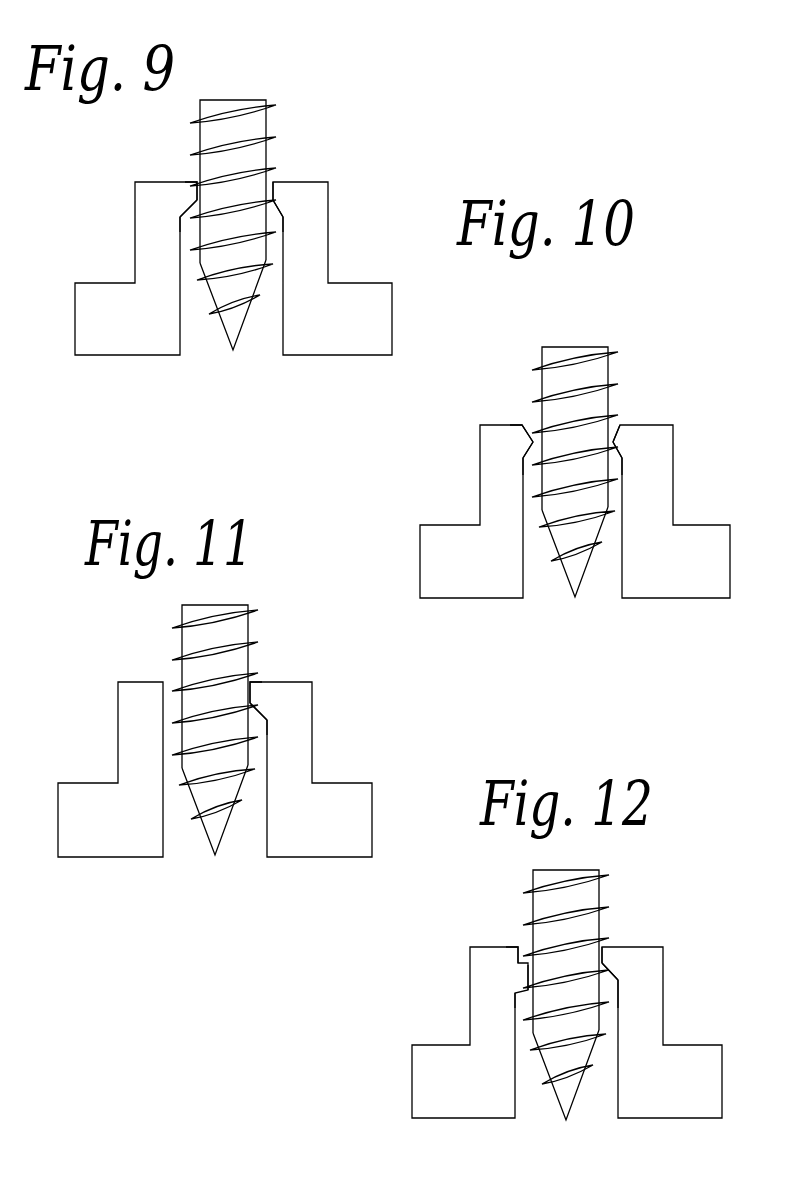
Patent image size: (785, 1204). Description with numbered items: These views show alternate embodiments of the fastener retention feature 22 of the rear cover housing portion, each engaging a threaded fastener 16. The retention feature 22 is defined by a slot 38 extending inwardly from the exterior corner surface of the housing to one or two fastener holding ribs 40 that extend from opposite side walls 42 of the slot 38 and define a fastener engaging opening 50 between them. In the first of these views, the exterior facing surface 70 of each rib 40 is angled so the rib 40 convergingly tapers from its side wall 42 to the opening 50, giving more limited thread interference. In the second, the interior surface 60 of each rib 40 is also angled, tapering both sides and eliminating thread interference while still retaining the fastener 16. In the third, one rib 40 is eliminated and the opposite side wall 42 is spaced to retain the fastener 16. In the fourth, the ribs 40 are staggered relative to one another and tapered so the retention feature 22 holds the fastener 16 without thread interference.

In FIG. 9, the fastener 16 is at (205, 221).
In FIG. 10, the fastener 16 is at (586, 464).
In FIG. 11, the fastener 16 is at (190, 754).
In FIG. 12, the fastener 16 is at (577, 1019).
In FIG. 9, the fastener retention feature 22 is at (208, 249).
In FIG. 10, the fastener retention feature 22 is at (537, 493).
In FIG. 11, the fastener retention feature 22 is at (197, 750).
In FIG. 12, the fastener retention feature 22 is at (529, 1013).
In FIG. 9, the slot 38 is at (215, 372).
In FIG. 10, the slot 38 is at (558, 612).
In FIG. 11, the slot 38 is at (190, 838).
In FIG. 12, the slot 38 is at (543, 1102).
In FIG. 9, the fastener holding rib 40 is at (182, 194).
In FIG. 10, the fastener holding rib 40 is at (523, 442).
In FIG. 11, the fastener holding rib 40 is at (267, 700).
In FIG. 12, the fastener holding rib 40 is at (519, 977).
In FIG. 9, the side wall 42 is at (183, 300).
In FIG. 10, the side wall 42 is at (526, 543).
In FIG. 11, the side wall 42 is at (163, 802).
In FIG. 12, the side wall 42 is at (517, 1062).
In FIG. 9, the fastener engaging opening 50 is at (225, 192).
In FIG. 10, the fastener engaging opening 50 is at (580, 442).
In FIG. 11, the fastener engaging opening 50 is at (205, 700).
In FIG. 12, the fastener engaging opening 50 is at (570, 963).
In FIG. 9, the interior surface 60 is at (193, 183).
In FIG. 10, the interior surface 60 is at (530, 424).
In FIG. 11, the interior surface 60 is at (253, 682).
In FIG. 12, the interior surface 60 is at (520, 947).
In FIG. 9, the exterior facing surface 70 is at (180, 225).
In FIG. 10, the exterior facing surface 70 is at (523, 468).
In FIG. 11, the exterior facing surface 70 is at (267, 725).
In FIG. 12, the exterior facing surface 70 is at (515, 998).